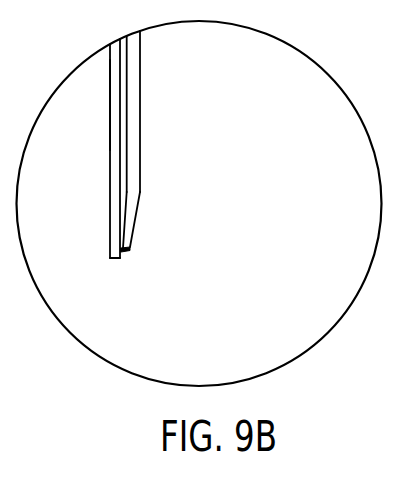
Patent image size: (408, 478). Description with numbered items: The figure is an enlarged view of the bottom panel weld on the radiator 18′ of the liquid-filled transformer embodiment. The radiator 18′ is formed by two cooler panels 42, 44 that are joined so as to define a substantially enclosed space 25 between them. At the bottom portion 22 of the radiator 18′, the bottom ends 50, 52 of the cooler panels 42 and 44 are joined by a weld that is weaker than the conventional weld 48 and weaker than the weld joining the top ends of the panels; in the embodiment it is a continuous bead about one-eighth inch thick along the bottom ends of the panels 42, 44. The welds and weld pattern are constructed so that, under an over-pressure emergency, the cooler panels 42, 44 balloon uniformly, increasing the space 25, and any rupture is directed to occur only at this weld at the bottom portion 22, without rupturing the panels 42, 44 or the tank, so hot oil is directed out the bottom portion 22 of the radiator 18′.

The radiator 18′ is at (100, 147).
The enclosed space 25 is at (125, 100).
The cooler panel 42 is at (142, 165).
The cooler panel 44 is at (108, 193).
The bottom portion 22 is at (137, 225).
The bottom end 52 is at (135, 238).
The conventional weld 48 is at (125, 250).
The bottom end 50 is at (118, 260).